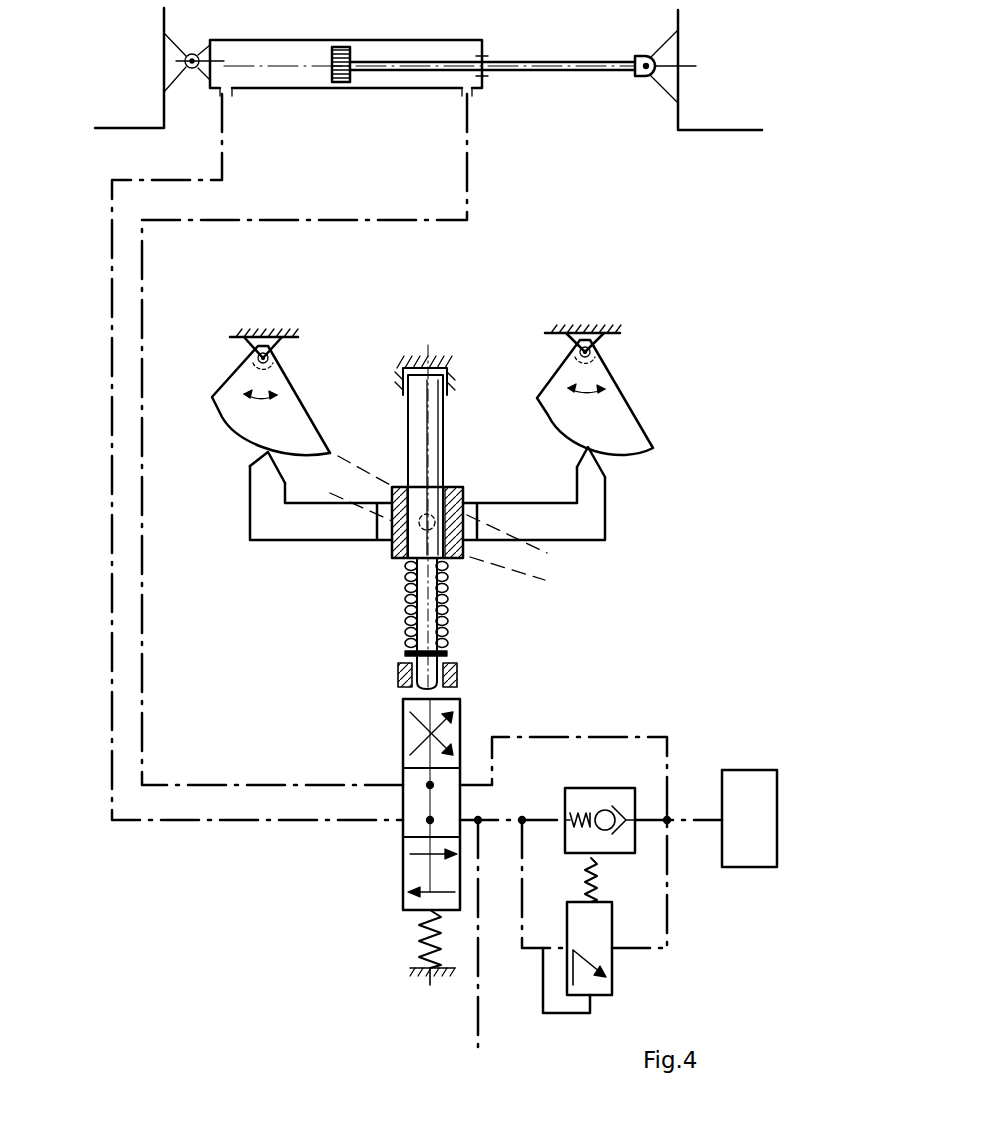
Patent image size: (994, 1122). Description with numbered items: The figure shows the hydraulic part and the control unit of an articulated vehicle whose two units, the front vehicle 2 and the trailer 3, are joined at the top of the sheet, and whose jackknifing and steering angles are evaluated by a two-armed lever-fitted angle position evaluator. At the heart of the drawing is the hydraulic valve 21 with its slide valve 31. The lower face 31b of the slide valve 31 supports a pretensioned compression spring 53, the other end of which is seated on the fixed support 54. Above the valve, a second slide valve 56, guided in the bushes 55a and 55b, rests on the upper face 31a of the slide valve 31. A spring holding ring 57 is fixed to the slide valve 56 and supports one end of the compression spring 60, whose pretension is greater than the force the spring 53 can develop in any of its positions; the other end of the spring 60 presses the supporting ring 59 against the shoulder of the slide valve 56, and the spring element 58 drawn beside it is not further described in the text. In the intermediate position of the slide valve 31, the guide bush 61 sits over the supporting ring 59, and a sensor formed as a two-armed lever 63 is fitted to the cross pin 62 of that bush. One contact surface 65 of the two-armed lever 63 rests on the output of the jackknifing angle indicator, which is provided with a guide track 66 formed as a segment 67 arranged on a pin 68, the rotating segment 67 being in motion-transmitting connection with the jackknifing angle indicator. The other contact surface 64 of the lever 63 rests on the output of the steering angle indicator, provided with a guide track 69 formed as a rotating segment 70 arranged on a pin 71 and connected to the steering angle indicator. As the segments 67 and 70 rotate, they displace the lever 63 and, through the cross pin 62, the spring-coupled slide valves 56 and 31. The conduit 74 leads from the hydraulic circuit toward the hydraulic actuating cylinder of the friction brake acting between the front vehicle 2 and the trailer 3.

The front vehicle 2 is at (164, 20).
The trailer 3 is at (678, 31).
The hydraulic valve 21 is at (403, 808).
The slide valve 31 is at (412, 705).
The face of slide valve 31a is at (416, 693).
The face of slide valve 31b is at (420, 916).
The compression spring 53 is at (437, 939).
The fixed support 54 is at (455, 968).
The bush 55a is at (400, 678).
The bush 55b is at (450, 378).
The slide valve 56 is at (425, 427).
The spring holding ring 57 is at (450, 655).
The compression spring 58 is at (448, 600).
The supporting ring 59 is at (405, 565).
The compression spring 60 is at (405, 632).
The guide bush 61 is at (405, 517).
The cross pin 62 is at (424, 518).
The two-armed lever 63 is at (590, 517).
The contact surface 64 is at (592, 462).
The contact surface 65 is at (264, 460).
The guide track 66 is at (230, 417).
The segment 67 is at (233, 382).
The pin 68 is at (265, 355).
The guide track 69 is at (548, 415).
The rotating segment 70 is at (557, 380).
The pin 71 is at (588, 350).
The conduit 74 is at (476, 1033).